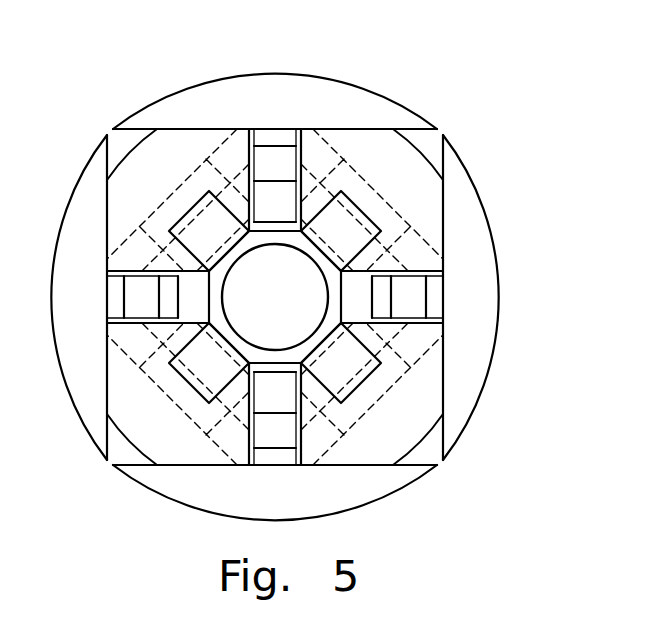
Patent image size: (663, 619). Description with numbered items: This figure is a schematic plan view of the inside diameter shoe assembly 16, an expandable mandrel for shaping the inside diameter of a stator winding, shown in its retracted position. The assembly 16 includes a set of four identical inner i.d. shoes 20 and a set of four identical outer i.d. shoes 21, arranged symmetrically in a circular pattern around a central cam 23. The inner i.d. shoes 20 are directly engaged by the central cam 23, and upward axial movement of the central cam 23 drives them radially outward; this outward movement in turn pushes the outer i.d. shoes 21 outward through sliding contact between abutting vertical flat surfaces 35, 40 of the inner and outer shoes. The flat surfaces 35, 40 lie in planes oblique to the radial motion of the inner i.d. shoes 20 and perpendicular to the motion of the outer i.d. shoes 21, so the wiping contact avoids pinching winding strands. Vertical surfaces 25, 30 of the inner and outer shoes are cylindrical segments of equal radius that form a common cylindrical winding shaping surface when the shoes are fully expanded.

The inside diameter shoe assembly 16 is at (303, 263).
The inner i.d. shoes 20 is at (381, 148).
The outer i.d. shoes 21 is at (485, 286).
The central cam 23 is at (329, 292).
The vertical surfaces of the inner i.d. shoes 25 is at (445, 136).
The vertical surfaces of the outer i.d. shoes 30 is at (467, 174).
The vertical flat surfaces of the inner i.d. shoes 35 is at (445, 203).
The vertical flat surfaces of the outer i.d. shoes 40 is at (436, 236).